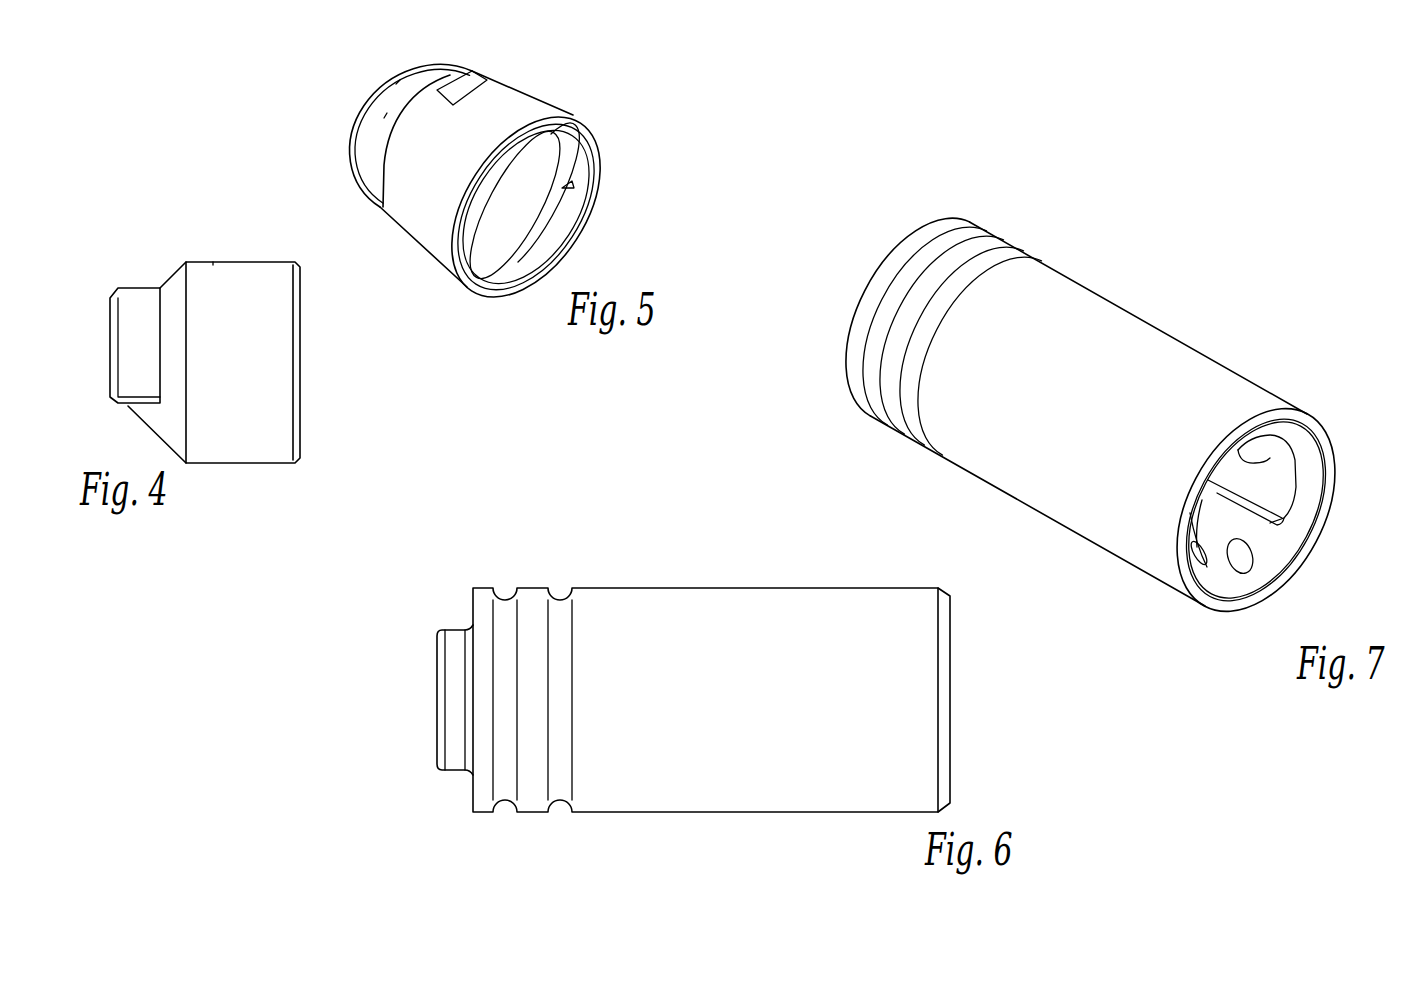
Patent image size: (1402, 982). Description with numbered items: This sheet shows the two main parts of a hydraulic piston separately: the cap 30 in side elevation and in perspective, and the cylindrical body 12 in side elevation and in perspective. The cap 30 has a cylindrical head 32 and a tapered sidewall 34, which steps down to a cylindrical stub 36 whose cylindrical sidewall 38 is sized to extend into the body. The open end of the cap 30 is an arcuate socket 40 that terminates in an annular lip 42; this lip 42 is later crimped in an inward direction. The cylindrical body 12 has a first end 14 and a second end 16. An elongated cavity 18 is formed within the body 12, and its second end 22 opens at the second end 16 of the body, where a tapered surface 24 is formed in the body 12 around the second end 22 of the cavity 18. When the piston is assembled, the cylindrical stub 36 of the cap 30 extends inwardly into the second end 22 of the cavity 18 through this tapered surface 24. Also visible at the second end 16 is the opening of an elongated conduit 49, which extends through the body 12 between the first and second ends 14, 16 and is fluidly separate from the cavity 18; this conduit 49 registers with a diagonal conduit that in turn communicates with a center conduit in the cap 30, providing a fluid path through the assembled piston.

In FIG. 6, the cylindrical body 12 is at (685, 676).
In FIG. 7, the cylindrical body 12 is at (1091, 428).
In FIG. 6, the first end 14 is at (437, 675).
In FIG. 7, the first end 14 is at (877, 272).
In FIG. 6, the second end 16 is at (952, 615).
In FIG. 7, the second end 16 is at (1327, 512).
In FIG. 7, the elongated cavity 18 is at (1238, 453).
In FIG. 7, the second end 22 is at (1297, 490).
In FIG. 7, the tapered surface 24 is at (1262, 573).
In FIG. 7, the elongated conduit 49 is at (1238, 557).
In FIG. 4, the cap 30 is at (224, 330).
In FIG. 5, the cap 30 is at (482, 172).
In FIG. 4, the cylindrical head 32 is at (245, 260).
In FIG. 5, the cylindrical head 32 is at (528, 97).
In FIG. 4, the tapered sidewall 34 is at (160, 416).
In FIG. 5, the tapered sidewall 34 is at (395, 138).
In FIG. 4, the cylindrical stub 36 is at (113, 341).
In FIG. 5, the cylindrical stub 36 is at (368, 110).
In FIG. 4, the cylindrical sidewall 38 is at (140, 297).
In FIG. 5, the cylindrical sidewall 38 is at (387, 113).
In FIG. 5, the arcuate socket 40 is at (562, 188).
In FIG. 4, the annular lip 42 is at (300, 290).
In FIG. 5, the annular lip 42 is at (597, 145).